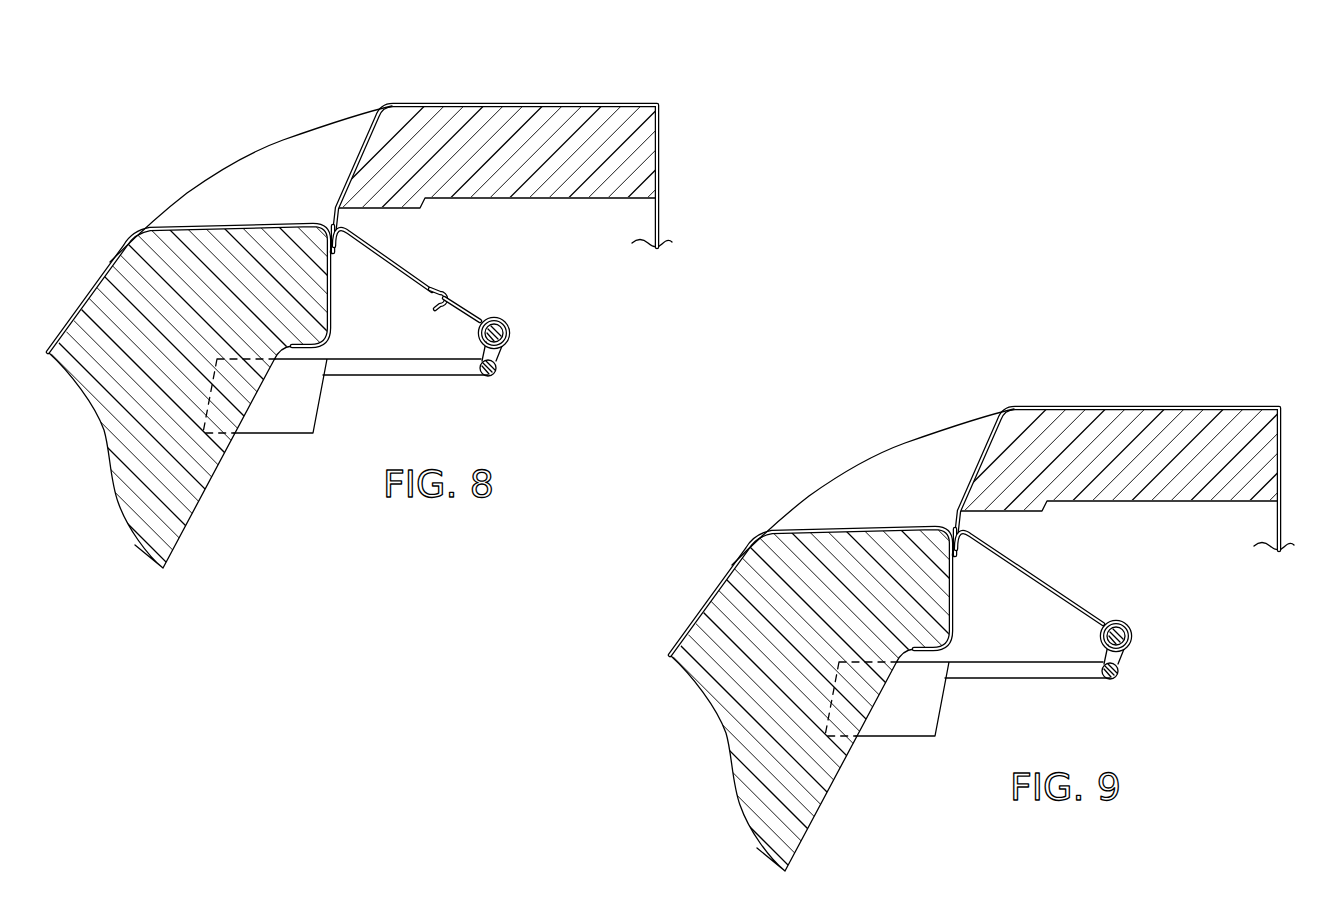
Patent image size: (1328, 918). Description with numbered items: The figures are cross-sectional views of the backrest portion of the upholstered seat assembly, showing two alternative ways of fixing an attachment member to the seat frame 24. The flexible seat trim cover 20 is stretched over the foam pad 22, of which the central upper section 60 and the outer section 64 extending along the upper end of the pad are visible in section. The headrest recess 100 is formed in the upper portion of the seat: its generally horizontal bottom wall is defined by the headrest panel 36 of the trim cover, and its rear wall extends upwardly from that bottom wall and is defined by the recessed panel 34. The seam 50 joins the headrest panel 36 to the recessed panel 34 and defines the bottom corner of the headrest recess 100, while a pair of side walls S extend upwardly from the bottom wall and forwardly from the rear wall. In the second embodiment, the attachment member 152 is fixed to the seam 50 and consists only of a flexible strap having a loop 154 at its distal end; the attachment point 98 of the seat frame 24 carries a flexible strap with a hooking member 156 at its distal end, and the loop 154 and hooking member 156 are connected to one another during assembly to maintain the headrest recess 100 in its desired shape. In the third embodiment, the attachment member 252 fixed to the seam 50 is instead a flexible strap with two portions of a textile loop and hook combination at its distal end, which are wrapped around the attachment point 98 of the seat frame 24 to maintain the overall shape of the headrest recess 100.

In FIG. 8, the flexible seat trim cover 20 is at (443, 78).
In FIG. 9, the flexible seat trim cover 20 is at (877, 624).
In FIG. 8, the foam pad 22 is at (535, 203).
In FIG. 9, the foam pad 22 is at (1127, 525).
In FIG. 8, the seat frame 24 is at (332, 405).
In FIG. 9, the seat frame 24 is at (967, 699).
In FIG. 8, the recessed panel 34 is at (358, 155).
In FIG. 9, the recessed panel 34 is at (1105, 470).
In FIG. 8, the headrest panel 36 is at (193, 226).
In FIG. 9, the headrest panel 36 is at (810, 556).
In FIG. 8, the seam 50 is at (338, 243).
In FIG. 9, the seam 50 is at (973, 571).
In FIG. 8, the central upper section 60 is at (128, 272).
In FIG. 9, the central upper section 60 is at (868, 703).
In FIG. 8, the outer section 64 is at (575, 150).
In FIG. 9, the outer section 64 is at (1091, 478).
In FIG. 8, the attachment point 98 is at (507, 343).
In FIG. 9, the attachment point 98 is at (1130, 660).
In FIG. 8, the headrest recess 100 is at (238, 193).
In FIG. 9, the headrest recess 100 is at (850, 457).
In FIG. 8, the side walls S is at (288, 177).
In FIG. 9, the side walls S is at (873, 485).
In FIG. 8, the attachment member 152 is at (417, 253).
In FIG. 8, the loop 154 is at (443, 288).
In FIG. 8, the hooking member 156 is at (467, 305).
In FIG. 9, the attachment member 252 is at (1045, 591).